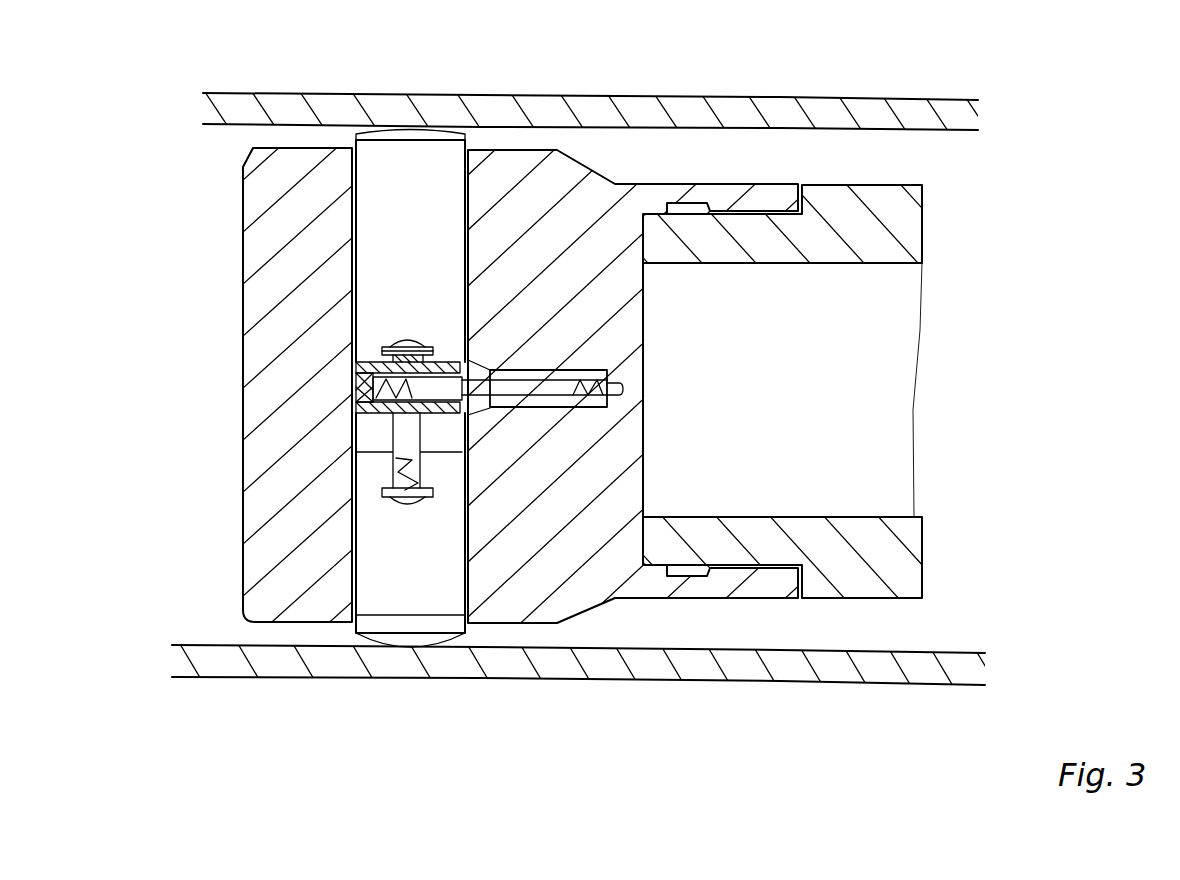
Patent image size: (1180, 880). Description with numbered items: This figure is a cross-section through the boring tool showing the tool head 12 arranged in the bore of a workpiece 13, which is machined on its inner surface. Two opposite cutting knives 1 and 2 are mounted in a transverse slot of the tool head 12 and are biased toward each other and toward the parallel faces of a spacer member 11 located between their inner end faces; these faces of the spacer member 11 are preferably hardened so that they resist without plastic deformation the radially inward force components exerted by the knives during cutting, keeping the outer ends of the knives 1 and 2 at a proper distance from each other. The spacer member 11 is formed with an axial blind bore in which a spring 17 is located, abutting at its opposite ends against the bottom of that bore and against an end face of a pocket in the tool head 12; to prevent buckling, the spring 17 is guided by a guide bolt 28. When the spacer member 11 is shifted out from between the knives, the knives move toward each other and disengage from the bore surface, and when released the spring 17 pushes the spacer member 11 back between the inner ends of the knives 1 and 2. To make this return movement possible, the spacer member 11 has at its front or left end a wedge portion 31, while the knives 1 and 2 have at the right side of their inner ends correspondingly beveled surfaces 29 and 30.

The cutting knife 1 is at (428, 184).
The cutting knife 2 is at (412, 580).
The spacer member 11 is at (353, 400).
The tool head 12 is at (585, 258).
The workpiece 13 is at (777, 118).
The spring 17 is at (603, 398).
The guide bolt 28 is at (623, 385).
The beveled surface 29 is at (462, 423).
The beveled surface 30 is at (458, 366).
The wedge portion 31 is at (357, 373).